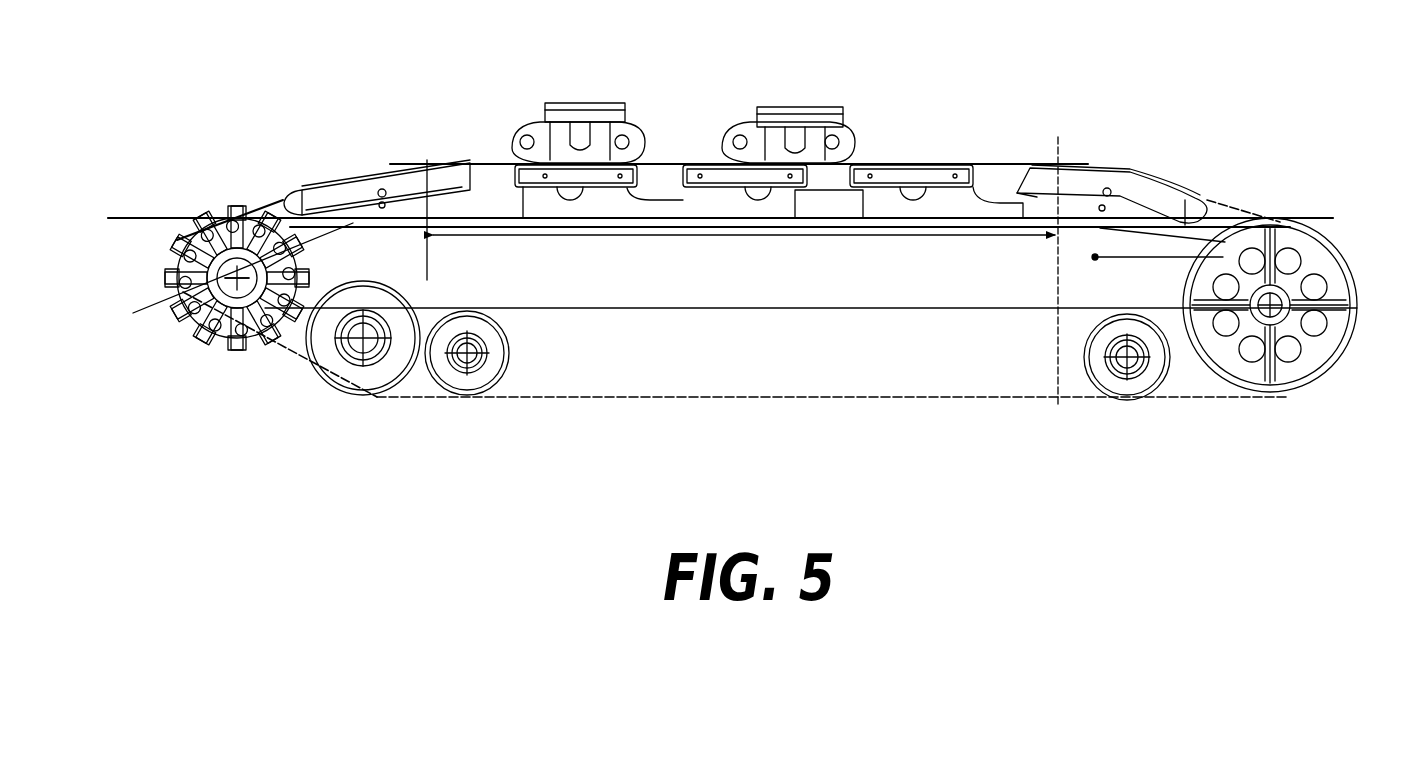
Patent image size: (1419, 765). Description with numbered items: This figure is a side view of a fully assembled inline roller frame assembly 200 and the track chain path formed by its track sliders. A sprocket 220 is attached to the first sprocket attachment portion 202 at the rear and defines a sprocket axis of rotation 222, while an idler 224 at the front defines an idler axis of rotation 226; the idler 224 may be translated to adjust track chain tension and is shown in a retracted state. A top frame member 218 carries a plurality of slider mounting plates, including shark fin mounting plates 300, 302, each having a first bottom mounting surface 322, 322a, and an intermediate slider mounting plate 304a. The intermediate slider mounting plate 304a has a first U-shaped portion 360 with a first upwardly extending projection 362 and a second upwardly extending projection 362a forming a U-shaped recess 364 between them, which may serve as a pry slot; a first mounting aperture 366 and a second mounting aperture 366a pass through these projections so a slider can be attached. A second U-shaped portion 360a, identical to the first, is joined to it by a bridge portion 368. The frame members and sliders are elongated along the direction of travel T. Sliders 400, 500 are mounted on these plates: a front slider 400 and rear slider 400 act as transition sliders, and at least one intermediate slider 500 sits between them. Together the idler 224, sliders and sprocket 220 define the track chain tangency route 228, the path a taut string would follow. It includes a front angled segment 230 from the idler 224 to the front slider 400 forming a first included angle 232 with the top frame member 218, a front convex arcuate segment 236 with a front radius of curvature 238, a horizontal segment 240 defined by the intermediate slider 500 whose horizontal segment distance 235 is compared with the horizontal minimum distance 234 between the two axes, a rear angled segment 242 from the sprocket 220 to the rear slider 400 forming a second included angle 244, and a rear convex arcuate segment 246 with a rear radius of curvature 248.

The inline roller frame assembly 200 is at (650, 74).
The first sprocket attachment portion 202 is at (258, 195).
The top frame member 218 is at (816, 222).
The sprocket 220 is at (200, 343).
The sprocket axis of rotation 222 is at (243, 283).
The idler 224 is at (1272, 380).
The idler axis of rotation 226 is at (1243, 360).
The track chain tangency route 228 is at (1280, 209).
The front angled segment 230 is at (1205, 200).
The first included angle 232 is at (1255, 202).
The horizontal minimum distance 234 is at (557, 310).
The horizontal segment distance 235 is at (833, 238).
The front convex arcuate segment 236 is at (1103, 165).
The front radius of curvature 238 is at (1095, 257).
The horizontal segment 240 is at (468, 195).
The rear angled segment 242 is at (280, 190).
The second included angle 244 is at (223, 206).
The rear convex arcuate segment 246 is at (440, 207).
The rear radius of curvature 248 is at (392, 300).
The slider mounting plate 300 is at (995, 195).
The slider mounting plate 302 is at (407, 265).
The intermediate slider mounting plate 304a is at (597, 197).
The first bottom mounting surface 322 is at (967, 237).
The first bottom mounting surface 322a is at (231, 286).
The first U-shaped portion 360 is at (745, 212).
The second U-shaped portion 360a is at (552, 205).
The first upwardly extending projection 362 is at (766, 190).
The second upwardly extending projection 362a is at (710, 207).
The U-shaped recess 364 is at (752, 175).
The first mounting aperture 366 is at (790, 177).
The second mounting aperture 366a is at (688, 190).
The bridge portion 368 is at (628, 205).
The front slider 400 is at (340, 178).
The intermediate slider 500 is at (511, 167).
The direction of travel T is at (770, 185).